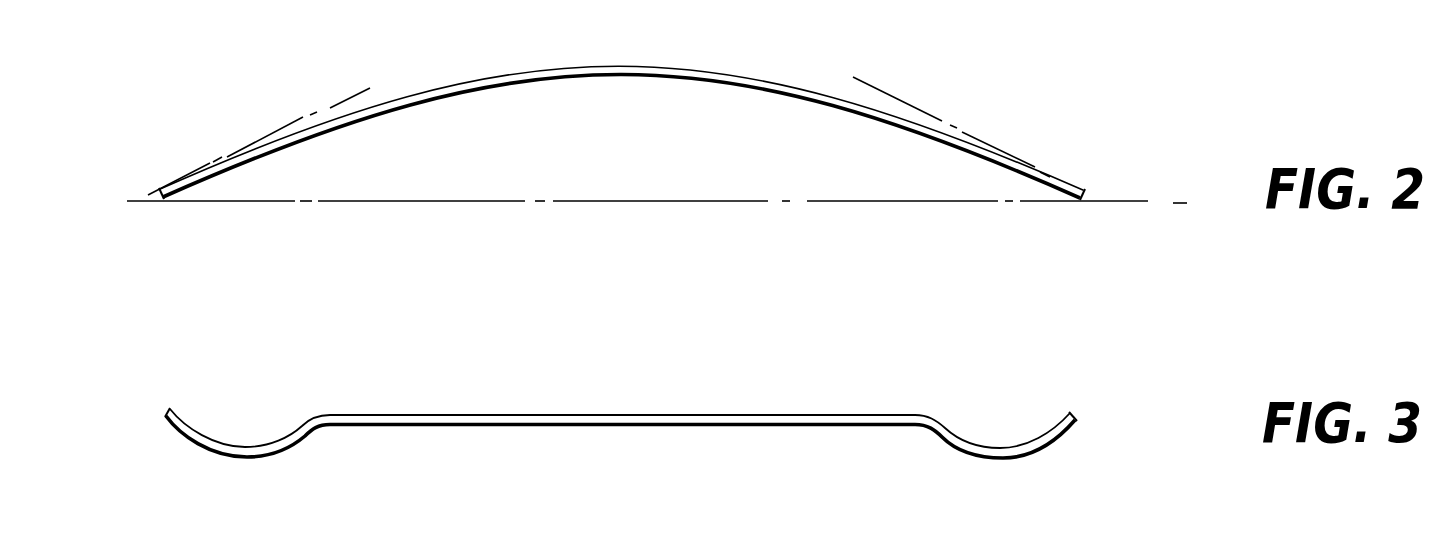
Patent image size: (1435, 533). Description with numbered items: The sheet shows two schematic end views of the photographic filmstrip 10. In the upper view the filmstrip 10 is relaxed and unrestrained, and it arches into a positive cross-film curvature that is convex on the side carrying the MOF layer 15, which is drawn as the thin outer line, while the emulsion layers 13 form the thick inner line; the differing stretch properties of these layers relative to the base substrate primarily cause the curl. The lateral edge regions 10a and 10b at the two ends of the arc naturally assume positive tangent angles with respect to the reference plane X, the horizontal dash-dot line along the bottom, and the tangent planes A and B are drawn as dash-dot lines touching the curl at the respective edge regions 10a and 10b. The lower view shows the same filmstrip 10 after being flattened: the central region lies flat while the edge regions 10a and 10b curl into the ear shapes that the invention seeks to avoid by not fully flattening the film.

In FIG. 2, the photographic filmstrip 10 is at (641, 115).
In FIG. 3, the photographic filmstrip 10 is at (621, 403).
In FIG. 2, the edge region 10a is at (1063, 162).
In FIG. 3, the edge region 10a is at (1037, 419).
In FIG. 2, the edge region 10b is at (200, 154).
In FIG. 3, the edge region 10b is at (212, 418).
In FIG. 2, the emulsion layers 13 is at (802, 99).
In FIG. 2, the MOF layer 15 is at (477, 80).
In FIG. 2, the tangent plane A is at (951, 116).
In FIG. 2, the tangent plane B is at (259, 128).
In FIG. 2, the reference plane X is at (668, 205).